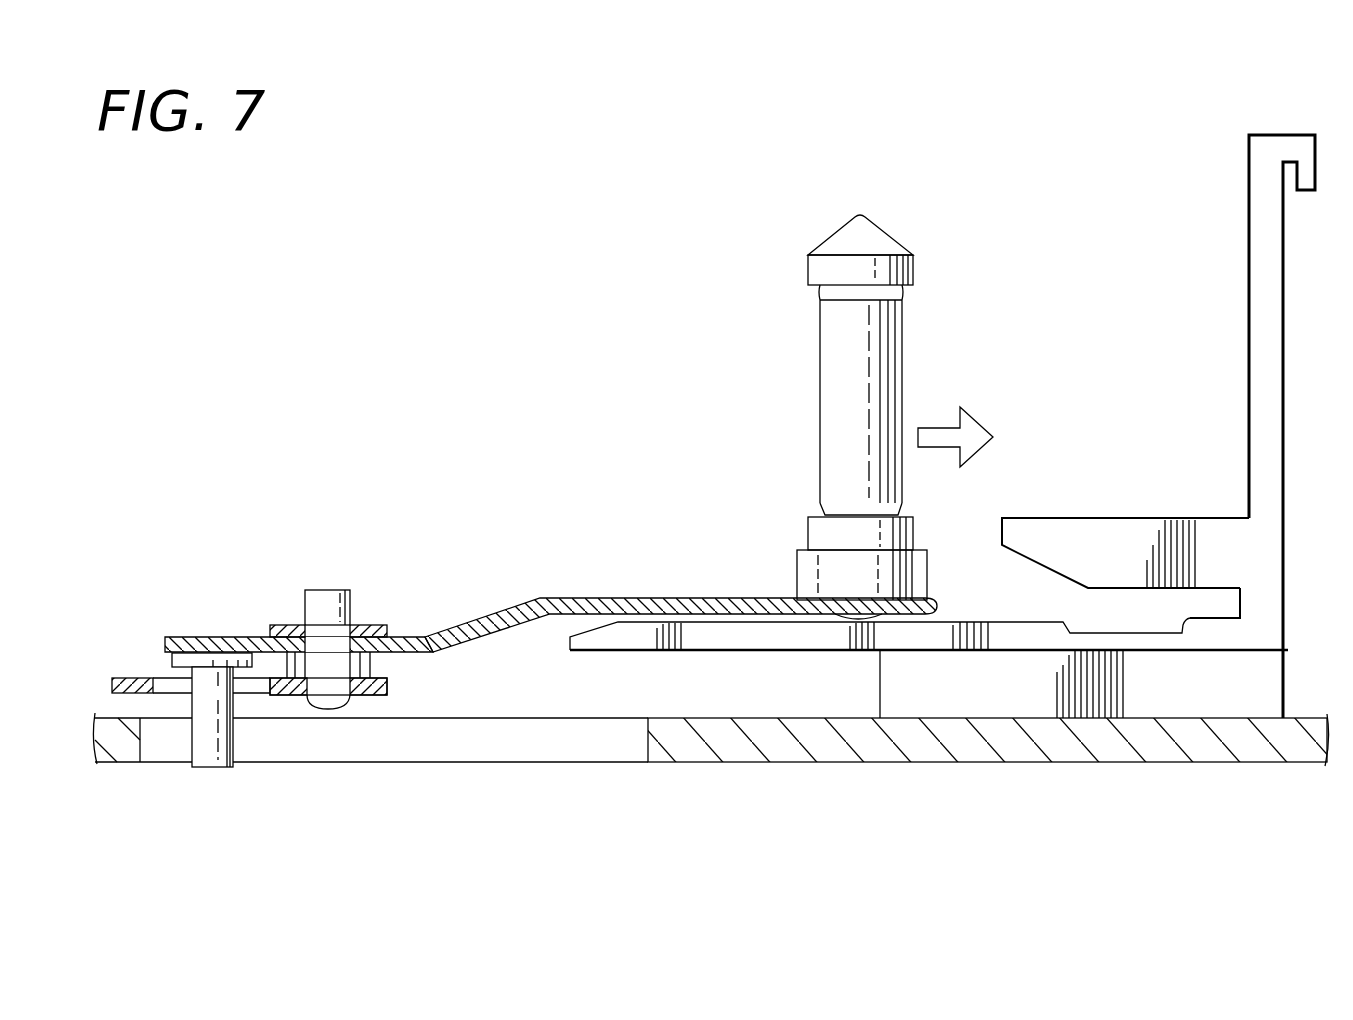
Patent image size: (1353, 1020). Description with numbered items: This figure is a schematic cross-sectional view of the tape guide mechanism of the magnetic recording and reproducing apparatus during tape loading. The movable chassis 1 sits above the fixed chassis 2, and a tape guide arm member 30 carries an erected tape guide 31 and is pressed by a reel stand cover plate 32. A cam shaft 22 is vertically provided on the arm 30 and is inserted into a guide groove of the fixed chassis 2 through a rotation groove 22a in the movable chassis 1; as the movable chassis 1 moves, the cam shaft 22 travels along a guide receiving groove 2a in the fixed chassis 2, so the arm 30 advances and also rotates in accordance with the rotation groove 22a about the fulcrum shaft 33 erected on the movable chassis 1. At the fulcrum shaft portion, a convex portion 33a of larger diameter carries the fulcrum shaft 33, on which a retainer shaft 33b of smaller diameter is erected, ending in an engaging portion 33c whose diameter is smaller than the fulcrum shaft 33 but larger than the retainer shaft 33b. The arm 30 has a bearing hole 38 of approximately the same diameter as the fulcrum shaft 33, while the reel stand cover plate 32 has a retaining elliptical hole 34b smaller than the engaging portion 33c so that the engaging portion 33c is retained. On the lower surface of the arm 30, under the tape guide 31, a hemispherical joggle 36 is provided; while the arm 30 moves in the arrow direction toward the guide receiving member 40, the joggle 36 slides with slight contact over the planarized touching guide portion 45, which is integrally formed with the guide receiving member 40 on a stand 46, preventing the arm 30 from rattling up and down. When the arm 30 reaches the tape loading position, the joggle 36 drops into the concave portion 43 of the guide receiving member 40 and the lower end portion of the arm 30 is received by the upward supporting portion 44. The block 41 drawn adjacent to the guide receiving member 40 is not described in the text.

The movable chassis 1 is at (123, 677).
The fixed chassis 2 is at (1017, 750).
The guide receiving groove 2a is at (469, 749).
The cam shaft 22 is at (220, 766).
The rotation groove 22a is at (163, 676).
The tape guide arm member 30 is at (627, 597).
The tape guide 31 is at (838, 360).
The reel stand cover plate 32 is at (347, 609).
The fulcrum shaft 33 is at (368, 602).
The convex portion 33a is at (370, 663).
The retainer shaft 33b is at (357, 627).
The engaging portion 33c is at (324, 597).
The retaining elliptical hole 34b is at (320, 620).
The hemispherical joggle 36 is at (828, 622).
The bearing hole 38 is at (285, 637).
The guide receiving member 40 is at (1267, 546).
The block 41 is at (1102, 530).
The concave portion 43 is at (1143, 633).
The upward supporting portion 44 is at (1213, 615).
The touching guide portion 45 is at (722, 620).
The stand 46 is at (1265, 689).